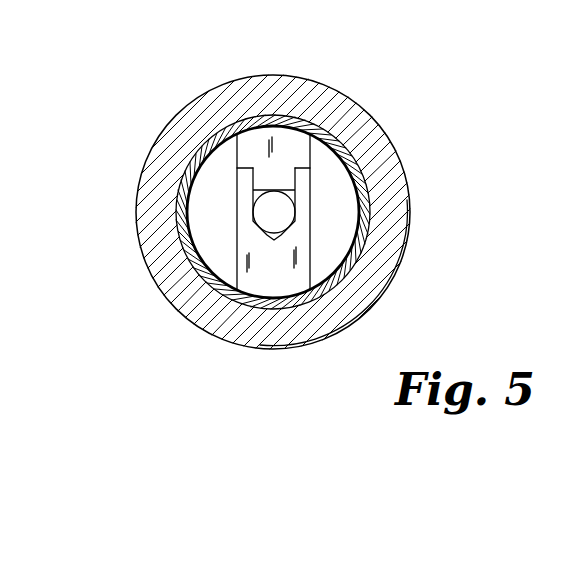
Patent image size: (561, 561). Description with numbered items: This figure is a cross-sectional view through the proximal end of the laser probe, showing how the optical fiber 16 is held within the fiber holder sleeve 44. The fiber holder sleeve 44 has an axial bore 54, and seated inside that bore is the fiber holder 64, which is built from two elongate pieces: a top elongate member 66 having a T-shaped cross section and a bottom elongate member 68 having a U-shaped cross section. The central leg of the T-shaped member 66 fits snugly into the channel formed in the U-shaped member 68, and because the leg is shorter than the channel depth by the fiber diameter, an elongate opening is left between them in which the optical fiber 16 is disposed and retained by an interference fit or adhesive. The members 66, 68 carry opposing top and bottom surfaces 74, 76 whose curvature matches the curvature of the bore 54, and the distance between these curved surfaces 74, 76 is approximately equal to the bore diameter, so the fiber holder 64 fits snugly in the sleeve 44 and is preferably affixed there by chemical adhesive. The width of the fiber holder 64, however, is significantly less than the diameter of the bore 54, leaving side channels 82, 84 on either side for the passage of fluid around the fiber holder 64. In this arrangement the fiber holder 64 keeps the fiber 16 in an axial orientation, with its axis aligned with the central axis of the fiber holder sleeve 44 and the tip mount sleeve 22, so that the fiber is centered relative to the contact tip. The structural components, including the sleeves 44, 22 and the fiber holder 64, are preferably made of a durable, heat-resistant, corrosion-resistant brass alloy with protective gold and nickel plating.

The optical fiber 16 is at (296, 208).
The tip mount sleeve 22 is at (385, 153).
The fiber holder sleeve 44 is at (192, 298).
The axial bore 54 is at (215, 268).
The fiber holder 64 is at (192, 160).
The elongate member 66 is at (310, 152).
The elongate member 68 is at (303, 267).
The top surface 74 is at (280, 127).
The bottom surface 76 is at (293, 298).
The side channel 82 is at (342, 186).
The side channel 84 is at (208, 203).